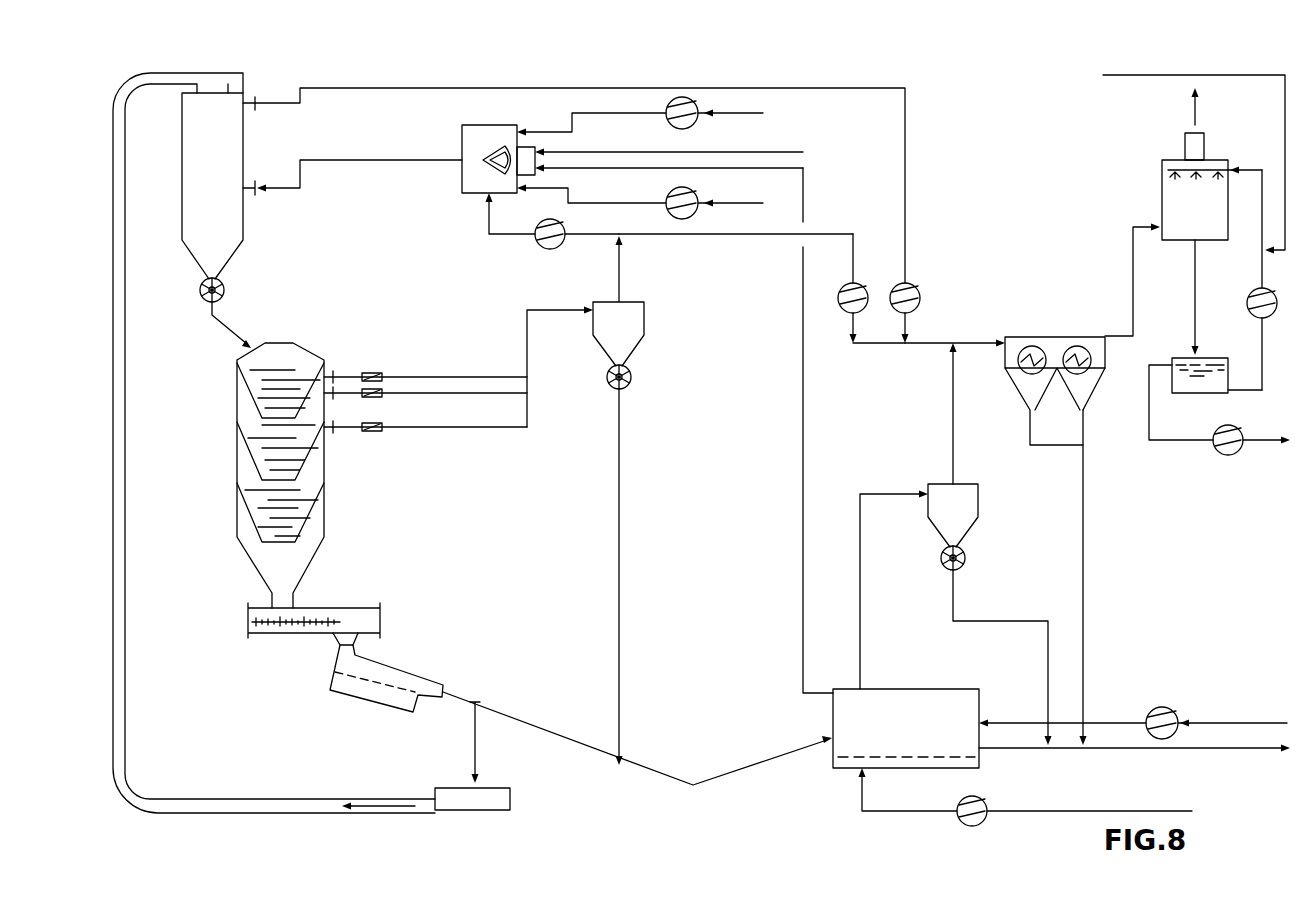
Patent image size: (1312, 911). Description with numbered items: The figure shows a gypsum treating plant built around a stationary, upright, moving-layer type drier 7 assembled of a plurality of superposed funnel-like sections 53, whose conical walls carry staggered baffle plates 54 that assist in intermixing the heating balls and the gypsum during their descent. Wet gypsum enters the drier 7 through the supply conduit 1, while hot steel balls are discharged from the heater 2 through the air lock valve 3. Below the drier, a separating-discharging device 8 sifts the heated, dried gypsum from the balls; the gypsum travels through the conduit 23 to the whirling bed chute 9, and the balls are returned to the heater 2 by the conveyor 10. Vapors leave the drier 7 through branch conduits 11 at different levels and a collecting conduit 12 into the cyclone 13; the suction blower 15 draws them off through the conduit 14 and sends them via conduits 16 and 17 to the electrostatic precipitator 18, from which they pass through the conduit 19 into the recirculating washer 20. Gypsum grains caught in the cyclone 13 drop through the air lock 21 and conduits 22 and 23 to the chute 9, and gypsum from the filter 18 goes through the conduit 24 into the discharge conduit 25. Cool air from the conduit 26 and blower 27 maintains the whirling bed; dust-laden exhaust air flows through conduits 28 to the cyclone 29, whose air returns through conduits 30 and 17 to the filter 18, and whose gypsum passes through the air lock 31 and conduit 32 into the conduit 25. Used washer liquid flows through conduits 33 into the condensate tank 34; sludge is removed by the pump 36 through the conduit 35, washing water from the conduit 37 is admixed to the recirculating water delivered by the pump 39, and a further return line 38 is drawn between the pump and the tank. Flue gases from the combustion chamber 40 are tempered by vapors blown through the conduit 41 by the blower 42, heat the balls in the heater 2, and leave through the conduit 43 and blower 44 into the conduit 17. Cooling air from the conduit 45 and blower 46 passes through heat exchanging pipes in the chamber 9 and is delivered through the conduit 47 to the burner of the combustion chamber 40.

The supply conduit 1 is at (311, 341).
The heater 2 is at (243, 152).
The air lock valve 3 is at (225, 289).
The moving bed drier 7 is at (326, 513).
The separating-discharging device 8 is at (388, 673).
The whirling bed chute 9 is at (910, 770).
The conveyor 10 is at (126, 705).
The branch conduits 11 is at (490, 377).
The collecting conduit 12 is at (527, 370).
The cyclone 13 is at (644, 322).
The conduit 14 is at (812, 232).
The suction blower 15 is at (852, 257).
The conduit 16 is at (879, 345).
The conduit 17 is at (930, 342).
The electrostatic precipitator 18 is at (1047, 337).
The conduit 19 is at (1134, 298).
The recirculating washer 20 is at (1160, 197).
The air lock 21 is at (632, 375).
The conduit 22 is at (617, 520).
The conduit 23 is at (662, 782).
The conduit 24 is at (1085, 537).
The discharge conduit 25 is at (1203, 750).
The conduit 26 is at (1093, 810).
The blower 27 is at (988, 804).
The conduits 28 is at (862, 624).
The cyclone 29 is at (979, 505).
The conduit 30 is at (952, 435).
The air lock 31 is at (966, 556).
The conduit 32 is at (1015, 622).
The conduits 33 is at (1197, 290).
The condensate tank 34 is at (1195, 395).
The conduit 35 is at (1192, 442).
The pump 36 is at (1230, 455).
The conduit 37 is at (1283, 120).
The line 38 is at (1263, 373).
The pump 39 is at (1272, 292).
The combustion chamber 40 is at (462, 140).
The conduit 41 is at (602, 237).
The blower 42 is at (553, 250).
The conduit 43 is at (908, 140).
The blower 44 is at (917, 297).
The conduit 45 is at (1232, 720).
The blower 46 is at (1168, 708).
The conduit 47 is at (800, 412).
The funnel-like sections 53 is at (247, 382).
The baffle plates 54 is at (263, 372).